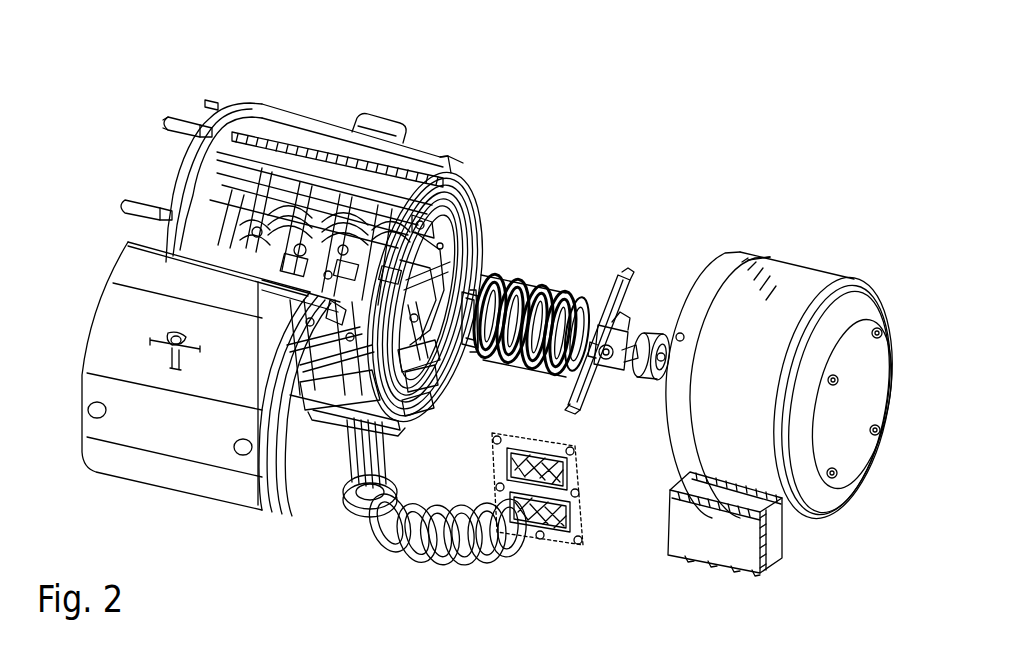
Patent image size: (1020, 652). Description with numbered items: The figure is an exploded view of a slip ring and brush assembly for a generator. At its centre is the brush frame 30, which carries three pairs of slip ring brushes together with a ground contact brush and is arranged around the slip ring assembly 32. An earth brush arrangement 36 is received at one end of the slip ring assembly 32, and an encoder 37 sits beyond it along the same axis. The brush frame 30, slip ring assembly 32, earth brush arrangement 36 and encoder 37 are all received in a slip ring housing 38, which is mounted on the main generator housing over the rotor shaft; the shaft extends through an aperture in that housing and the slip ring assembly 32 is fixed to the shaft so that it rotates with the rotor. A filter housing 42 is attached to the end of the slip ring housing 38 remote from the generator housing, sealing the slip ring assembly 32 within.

The brush frame 30 is at (316, 214).
The slip ring assembly 32 is at (536, 252).
The earth brush arrangement 36 is at (605, 298).
The encoder 37 is at (650, 378).
The slip ring housing 38 is at (88, 339).
The filter housing 42 is at (718, 266).